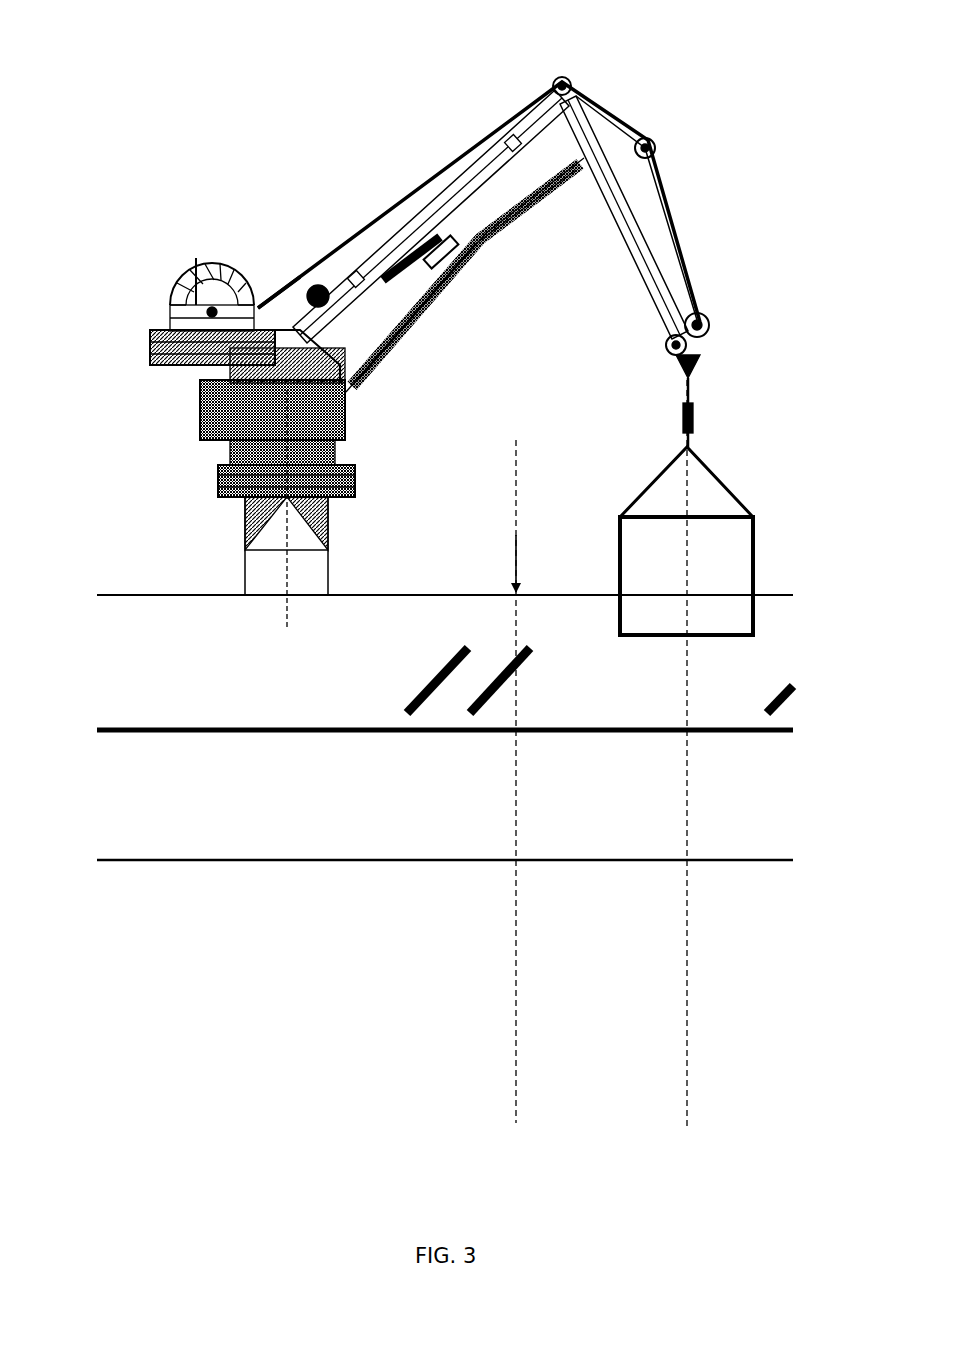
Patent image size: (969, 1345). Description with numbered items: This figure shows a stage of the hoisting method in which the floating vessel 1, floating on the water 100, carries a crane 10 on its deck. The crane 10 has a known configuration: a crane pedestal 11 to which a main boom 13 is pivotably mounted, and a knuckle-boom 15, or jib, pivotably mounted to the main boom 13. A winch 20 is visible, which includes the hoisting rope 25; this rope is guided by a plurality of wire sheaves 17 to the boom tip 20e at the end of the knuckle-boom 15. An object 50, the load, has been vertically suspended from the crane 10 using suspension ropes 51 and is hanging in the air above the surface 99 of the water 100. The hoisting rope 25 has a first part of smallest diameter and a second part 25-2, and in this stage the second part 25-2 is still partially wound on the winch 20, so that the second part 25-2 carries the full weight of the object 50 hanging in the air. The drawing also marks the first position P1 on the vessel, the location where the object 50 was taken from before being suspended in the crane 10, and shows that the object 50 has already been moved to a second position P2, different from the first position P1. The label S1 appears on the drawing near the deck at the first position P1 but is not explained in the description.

The floating vessel 1 is at (160, 568).
The crane 10 is at (245, 135).
The crane pedestal 11 is at (200, 420).
The main boom 13 is at (467, 207).
The knuckle-boom 15 is at (647, 233).
The wire sheaves 17 is at (564, 78).
The winch 20 is at (170, 276).
The boom tip 20e is at (700, 381).
The hoisting rope 25 is at (300, 262).
The second part 25-2 is at (362, 222).
The object 50 is at (730, 560).
The suspension ropes 51 is at (660, 473).
The surface 99 is at (131, 728).
The water 100 is at (163, 806).
The slewing axis position / direction S1 is at (499, 563).
The first position P1 is at (517, 982).
The second position P2 is at (687, 982).